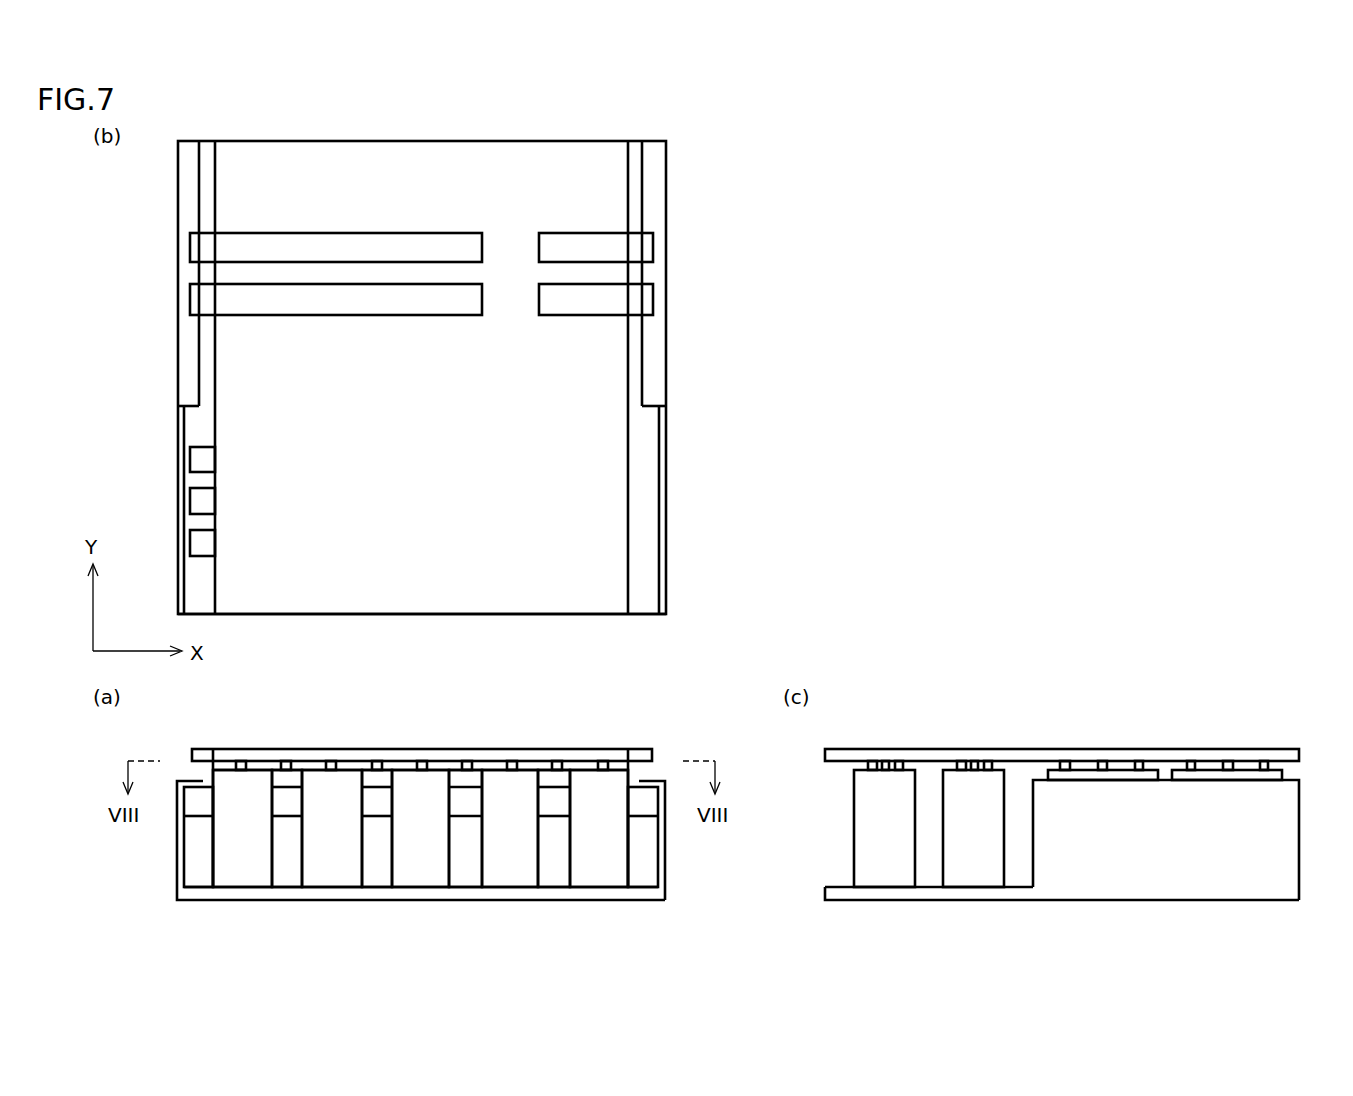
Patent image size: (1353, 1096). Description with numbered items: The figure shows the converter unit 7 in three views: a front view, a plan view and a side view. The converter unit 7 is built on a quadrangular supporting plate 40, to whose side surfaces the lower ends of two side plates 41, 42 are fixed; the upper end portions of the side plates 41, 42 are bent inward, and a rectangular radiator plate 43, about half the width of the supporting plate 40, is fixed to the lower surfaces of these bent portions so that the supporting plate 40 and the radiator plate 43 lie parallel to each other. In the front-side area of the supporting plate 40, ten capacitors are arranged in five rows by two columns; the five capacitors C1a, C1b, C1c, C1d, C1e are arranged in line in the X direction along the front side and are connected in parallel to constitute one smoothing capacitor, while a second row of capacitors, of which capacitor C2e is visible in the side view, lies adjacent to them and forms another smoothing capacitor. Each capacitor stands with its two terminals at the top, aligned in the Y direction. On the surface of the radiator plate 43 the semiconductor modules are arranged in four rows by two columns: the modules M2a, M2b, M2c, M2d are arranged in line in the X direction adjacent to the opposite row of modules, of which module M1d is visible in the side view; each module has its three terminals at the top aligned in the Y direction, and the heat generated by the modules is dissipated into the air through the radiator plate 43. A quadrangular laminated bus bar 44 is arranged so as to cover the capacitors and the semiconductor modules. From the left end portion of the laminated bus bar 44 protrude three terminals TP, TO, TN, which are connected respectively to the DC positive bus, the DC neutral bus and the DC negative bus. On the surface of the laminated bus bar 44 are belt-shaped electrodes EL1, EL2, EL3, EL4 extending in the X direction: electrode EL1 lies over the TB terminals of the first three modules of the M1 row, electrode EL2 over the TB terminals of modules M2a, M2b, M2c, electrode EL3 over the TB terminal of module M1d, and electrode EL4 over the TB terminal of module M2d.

The converter unit 7 is at (672, 135).
The supporting plate 40 is at (200, 893).
The side plate 41 is at (190, 359).
The side plate 42 is at (655, 359).
The radiator plate 43 is at (643, 803).
The laminated bus bar 44 is at (423, 597).
The electrode EL1 is at (200, 247).
The electrode EL2 is at (200, 299).
The electrode EL3 is at (640, 247).
The electrode EL4 is at (640, 299).
The terminal TN is at (205, 462).
The terminal TO is at (205, 503).
The terminal TP is at (205, 544).
The capacitor C1a is at (243, 870).
The capacitor C1b is at (333, 870).
The capacitor C1c is at (421, 870).
The capacitor C1d is at (510, 870).
The capacitor C1e is at (599, 870).
The capacitor C2e is at (973, 870).
The semiconductor module M2a is at (287, 778).
The semiconductor module M2b is at (377, 778).
The semiconductor module M2c is at (466, 778).
The semiconductor module M2d is at (554, 778).
The semiconductor module M1d is at (1210, 775).